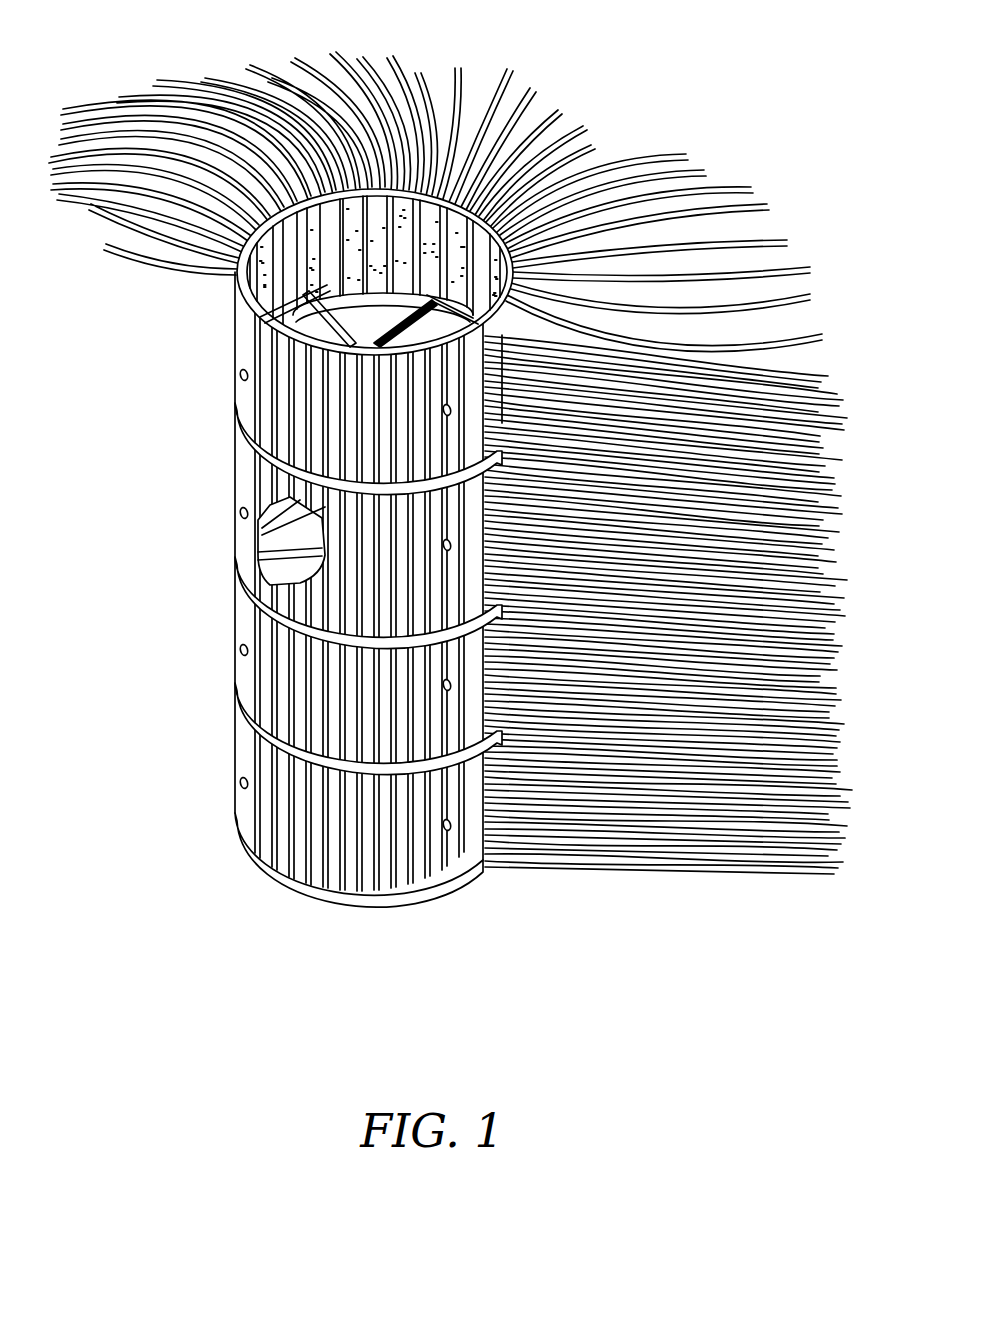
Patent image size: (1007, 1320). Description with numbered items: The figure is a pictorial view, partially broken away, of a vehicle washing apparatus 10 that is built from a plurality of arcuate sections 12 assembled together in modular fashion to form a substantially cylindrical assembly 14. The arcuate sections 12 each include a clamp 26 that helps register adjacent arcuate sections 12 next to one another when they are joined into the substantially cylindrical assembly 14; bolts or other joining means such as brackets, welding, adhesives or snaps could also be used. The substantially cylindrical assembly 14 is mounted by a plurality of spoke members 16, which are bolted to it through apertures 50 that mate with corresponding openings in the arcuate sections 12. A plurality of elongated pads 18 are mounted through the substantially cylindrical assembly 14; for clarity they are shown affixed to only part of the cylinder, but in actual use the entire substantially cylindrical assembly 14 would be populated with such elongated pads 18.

The vehicle washing apparatus 10 is at (320, 529).
The arcuate sections 12 is at (226, 402).
The substantially cylindrical assembly 14 is at (226, 603).
The spoke members 16 is at (232, 305).
The elongated pads 18 is at (117, 134).
The clamp 26 is at (235, 290).
The apertures 50 is at (330, 303).